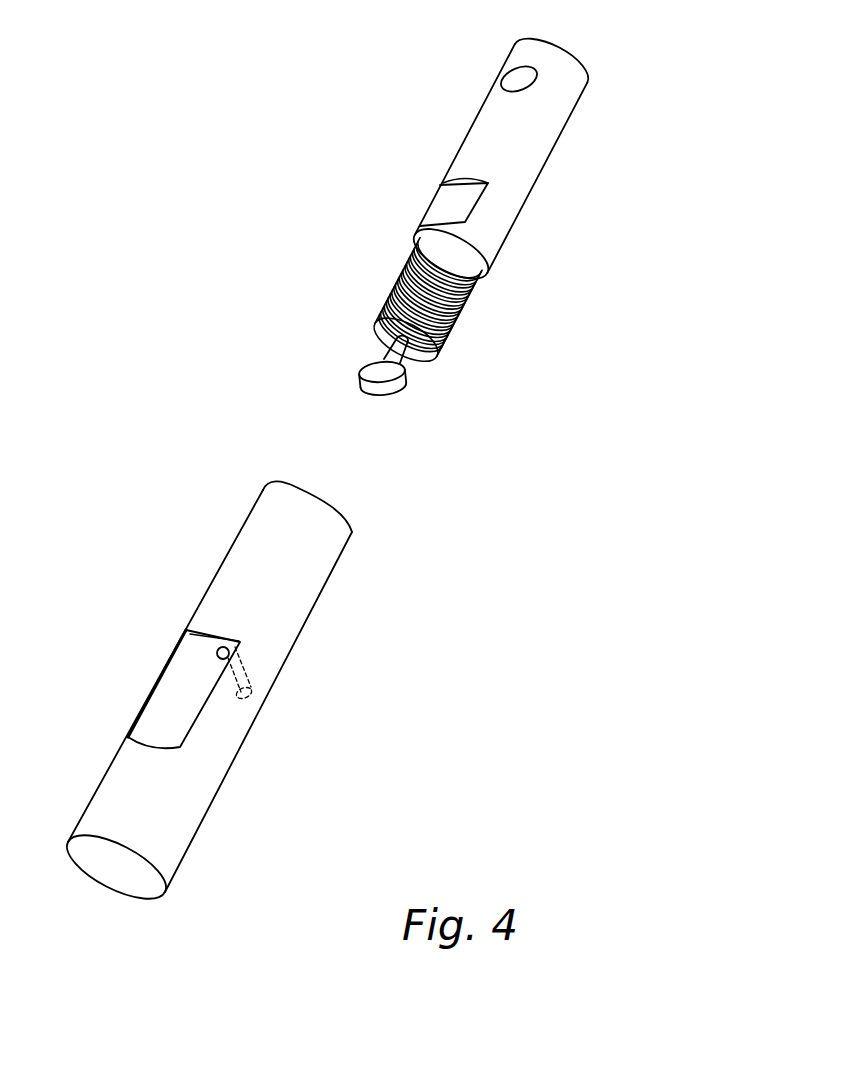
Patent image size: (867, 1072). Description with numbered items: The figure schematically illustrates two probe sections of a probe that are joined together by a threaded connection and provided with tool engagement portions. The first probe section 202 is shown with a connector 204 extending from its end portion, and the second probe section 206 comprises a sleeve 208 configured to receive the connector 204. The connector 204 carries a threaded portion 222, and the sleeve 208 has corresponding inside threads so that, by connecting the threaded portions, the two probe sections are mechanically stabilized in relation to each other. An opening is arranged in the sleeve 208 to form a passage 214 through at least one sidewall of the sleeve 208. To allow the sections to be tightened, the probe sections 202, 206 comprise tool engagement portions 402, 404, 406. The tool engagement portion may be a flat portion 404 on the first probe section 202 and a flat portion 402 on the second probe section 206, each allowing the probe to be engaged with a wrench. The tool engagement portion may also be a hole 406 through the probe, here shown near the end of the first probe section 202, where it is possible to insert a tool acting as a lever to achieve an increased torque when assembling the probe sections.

The first probe section 202 is at (526, 173).
The connector 204 is at (405, 217).
The second probe section 206 is at (288, 627).
The sleeve 208 is at (250, 480).
The passage 214 is at (165, 626).
The threaded portion 222 is at (450, 302).
The flat portion 402 is at (157, 721).
The flat portion 404 is at (443, 207).
The hole 406 is at (520, 78).